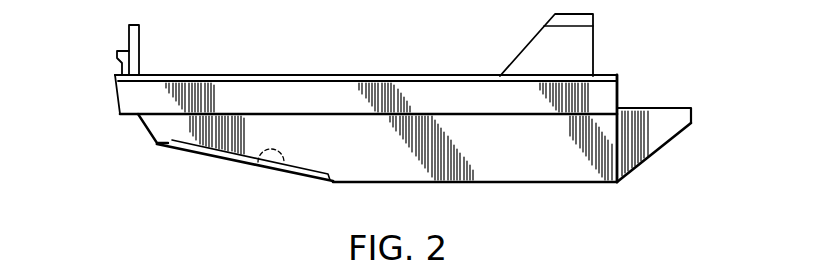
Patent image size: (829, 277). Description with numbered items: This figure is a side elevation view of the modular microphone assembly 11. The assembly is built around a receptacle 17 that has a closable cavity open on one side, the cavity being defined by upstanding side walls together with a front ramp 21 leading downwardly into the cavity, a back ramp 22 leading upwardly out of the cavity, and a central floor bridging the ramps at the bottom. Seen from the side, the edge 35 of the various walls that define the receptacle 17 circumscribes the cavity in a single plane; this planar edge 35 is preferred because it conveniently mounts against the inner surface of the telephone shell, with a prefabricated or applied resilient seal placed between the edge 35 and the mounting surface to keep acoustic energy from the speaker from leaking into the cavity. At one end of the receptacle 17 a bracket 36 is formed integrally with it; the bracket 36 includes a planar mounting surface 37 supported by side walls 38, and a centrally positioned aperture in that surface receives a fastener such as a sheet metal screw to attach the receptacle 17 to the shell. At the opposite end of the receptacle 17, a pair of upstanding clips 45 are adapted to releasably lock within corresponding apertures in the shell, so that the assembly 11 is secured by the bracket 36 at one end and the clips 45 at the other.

The modular microphone assembly 11 is at (684, 52).
The receptacle 17 is at (527, 185).
The front ramp 21 is at (253, 165).
The back ramp 22 is at (528, 45).
The edge 35 is at (270, 76).
The bracket 36 is at (665, 148).
The planar mounting surface 37 is at (642, 108).
The side walls 38 is at (628, 160).
The upstanding clips 45 is at (119, 51).